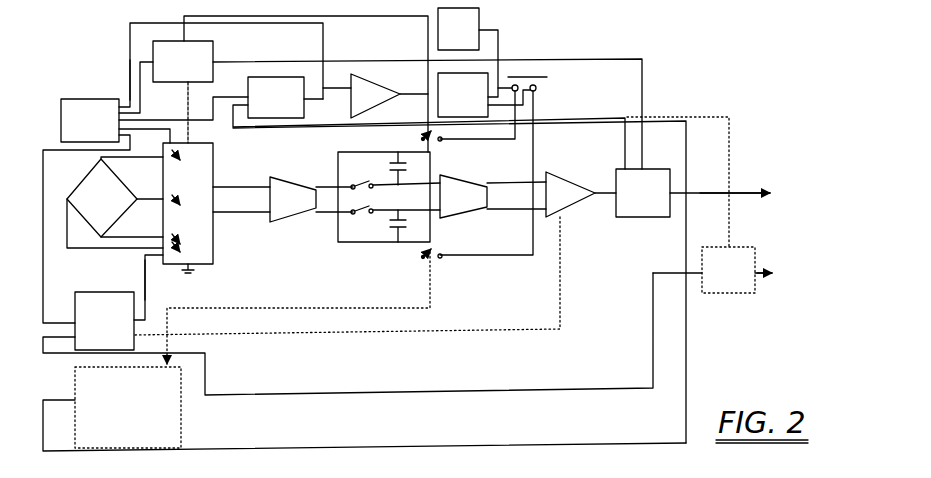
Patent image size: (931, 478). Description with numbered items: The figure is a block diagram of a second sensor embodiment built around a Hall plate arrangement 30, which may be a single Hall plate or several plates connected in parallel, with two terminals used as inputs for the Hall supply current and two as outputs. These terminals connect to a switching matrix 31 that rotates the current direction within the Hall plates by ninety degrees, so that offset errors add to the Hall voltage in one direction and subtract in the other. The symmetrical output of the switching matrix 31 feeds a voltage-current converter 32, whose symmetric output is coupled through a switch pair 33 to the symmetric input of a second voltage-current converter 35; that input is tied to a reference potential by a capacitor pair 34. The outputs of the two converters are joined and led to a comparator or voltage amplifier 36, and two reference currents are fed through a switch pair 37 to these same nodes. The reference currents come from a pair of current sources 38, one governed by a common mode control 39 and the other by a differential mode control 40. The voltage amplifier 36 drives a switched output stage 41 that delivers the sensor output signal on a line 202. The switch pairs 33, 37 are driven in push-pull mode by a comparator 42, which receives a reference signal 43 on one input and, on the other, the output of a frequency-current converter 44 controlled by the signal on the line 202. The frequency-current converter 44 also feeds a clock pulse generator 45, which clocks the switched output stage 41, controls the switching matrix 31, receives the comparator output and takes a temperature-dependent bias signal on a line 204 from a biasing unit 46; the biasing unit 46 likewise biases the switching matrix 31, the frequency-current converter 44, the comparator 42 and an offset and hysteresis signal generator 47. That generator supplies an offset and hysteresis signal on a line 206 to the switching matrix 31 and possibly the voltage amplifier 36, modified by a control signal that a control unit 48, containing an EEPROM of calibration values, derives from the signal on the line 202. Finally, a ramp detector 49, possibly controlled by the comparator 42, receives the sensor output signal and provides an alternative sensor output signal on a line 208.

The Hall plate arrangement 30 is at (115, 202).
The switching matrix 31 is at (213, 166).
The voltage-current converter 32 is at (311, 199).
The switch pair 33 is at (388, 197).
The capacitor pair 34 is at (384, 197).
The voltage-current converter 35 is at (493, 196).
The voltage amplifier 36 is at (375, 253).
The switch pair 37 is at (421, 139).
The pair of current sources 38 is at (503, 166).
The common mode control 39 is at (468, 52).
The differential mode control 40 is at (484, 95).
The switched output stage 41 is at (693, 182).
The comparator 42 is at (389, 96).
The reference signal 43 is at (350, 107).
The frequency-current converter 44 is at (459, 260).
The clock pulse generator 45 is at (380, 92).
The biasing unit 46 is at (183, 173).
The offset and hysteresis signal generator 47 is at (348, 334).
The control unit 48 is at (364, 409).
The ramp detector 49 is at (712, 270).
The line 202 is at (746, 192).
The line 204 is at (131, 103).
The line 206 is at (146, 286).
The line 208 is at (763, 272).